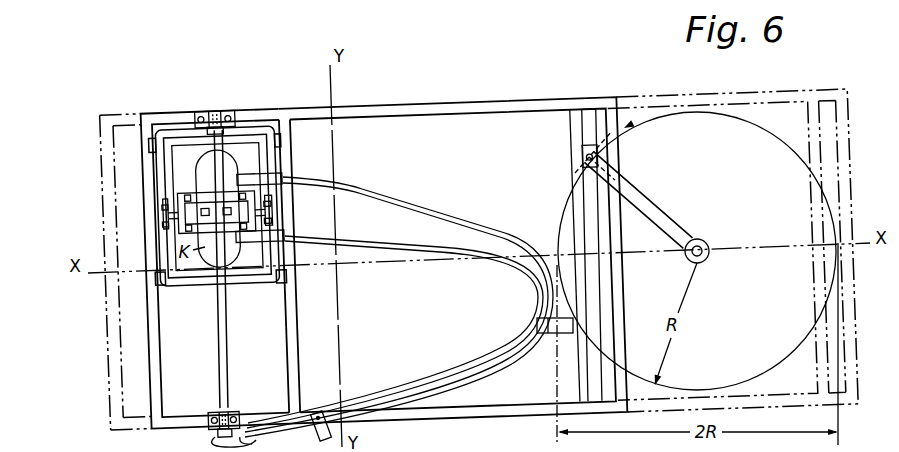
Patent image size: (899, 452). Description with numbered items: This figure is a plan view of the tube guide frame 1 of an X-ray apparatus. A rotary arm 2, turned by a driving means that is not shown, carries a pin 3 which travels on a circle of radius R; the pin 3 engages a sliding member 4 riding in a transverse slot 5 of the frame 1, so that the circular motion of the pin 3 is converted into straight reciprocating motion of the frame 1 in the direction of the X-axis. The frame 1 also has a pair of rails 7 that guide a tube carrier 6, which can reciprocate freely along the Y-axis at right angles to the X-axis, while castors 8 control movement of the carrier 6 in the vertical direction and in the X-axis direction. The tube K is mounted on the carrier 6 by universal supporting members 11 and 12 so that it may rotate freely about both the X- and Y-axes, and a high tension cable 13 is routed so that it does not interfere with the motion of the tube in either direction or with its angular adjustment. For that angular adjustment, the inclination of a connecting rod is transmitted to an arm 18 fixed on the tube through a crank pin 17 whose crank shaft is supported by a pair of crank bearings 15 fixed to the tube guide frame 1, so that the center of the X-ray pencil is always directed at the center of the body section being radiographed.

The tube guide frame 1 is at (505, 98).
The rotary arm 2 is at (652, 197).
The pin 3 is at (585, 160).
The sliding member 4 is at (590, 112).
The transverse slot 5 is at (585, 223).
The tube carrier 6 is at (258, 288).
The rails 7 is at (152, 350).
The castors 8 is at (150, 128).
The universal supporting member 11 is at (188, 192).
The universal supporting member 12 is at (163, 218).
The high tension cable 13 is at (380, 203).
The crank bearings 15 is at (206, 112).
The crank pin 17 is at (227, 360).
The arm 18 is at (228, 206).